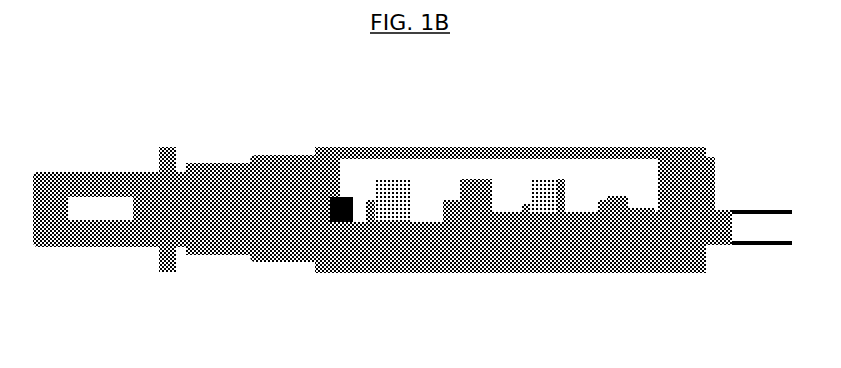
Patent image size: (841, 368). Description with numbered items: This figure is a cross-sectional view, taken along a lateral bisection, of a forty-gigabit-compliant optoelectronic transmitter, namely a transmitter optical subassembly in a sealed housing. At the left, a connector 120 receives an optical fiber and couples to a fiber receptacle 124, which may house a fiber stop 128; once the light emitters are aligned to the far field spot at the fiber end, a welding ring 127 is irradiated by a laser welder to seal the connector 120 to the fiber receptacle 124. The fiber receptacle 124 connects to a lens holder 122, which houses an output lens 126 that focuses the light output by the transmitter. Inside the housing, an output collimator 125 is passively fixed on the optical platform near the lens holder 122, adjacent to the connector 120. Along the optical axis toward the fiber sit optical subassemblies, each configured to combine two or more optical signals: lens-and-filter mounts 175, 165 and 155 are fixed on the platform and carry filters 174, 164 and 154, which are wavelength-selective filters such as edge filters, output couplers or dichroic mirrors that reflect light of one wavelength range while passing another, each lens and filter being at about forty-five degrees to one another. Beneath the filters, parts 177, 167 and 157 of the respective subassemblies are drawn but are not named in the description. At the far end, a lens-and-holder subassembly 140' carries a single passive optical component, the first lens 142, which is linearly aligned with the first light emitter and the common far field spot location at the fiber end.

The connector 120 is at (95, 171).
The lens holder 122 is at (283, 150).
The fiber receptacle 124 is at (200, 253).
The output collimator 125 is at (348, 196).
The output lens 126 is at (280, 217).
The welding ring 127 is at (167, 150).
The fiber stop 128 is at (203, 197).
The lens-and-holder subassembly 140' is at (626, 255).
The first lens 142 is at (615, 198).
The filter 154 is at (540, 187).
The lens-and-filter mount 155 is at (527, 214).
The contact pad 157 is at (541, 228).
The filter 164 is at (470, 187).
The lens-and-filter mount 165 is at (452, 213).
The contact pad 167 is at (480, 225).
The filter 174 is at (387, 188).
The lens-and-filter mount 175 is at (373, 217).
The contact pad 177 is at (392, 225).